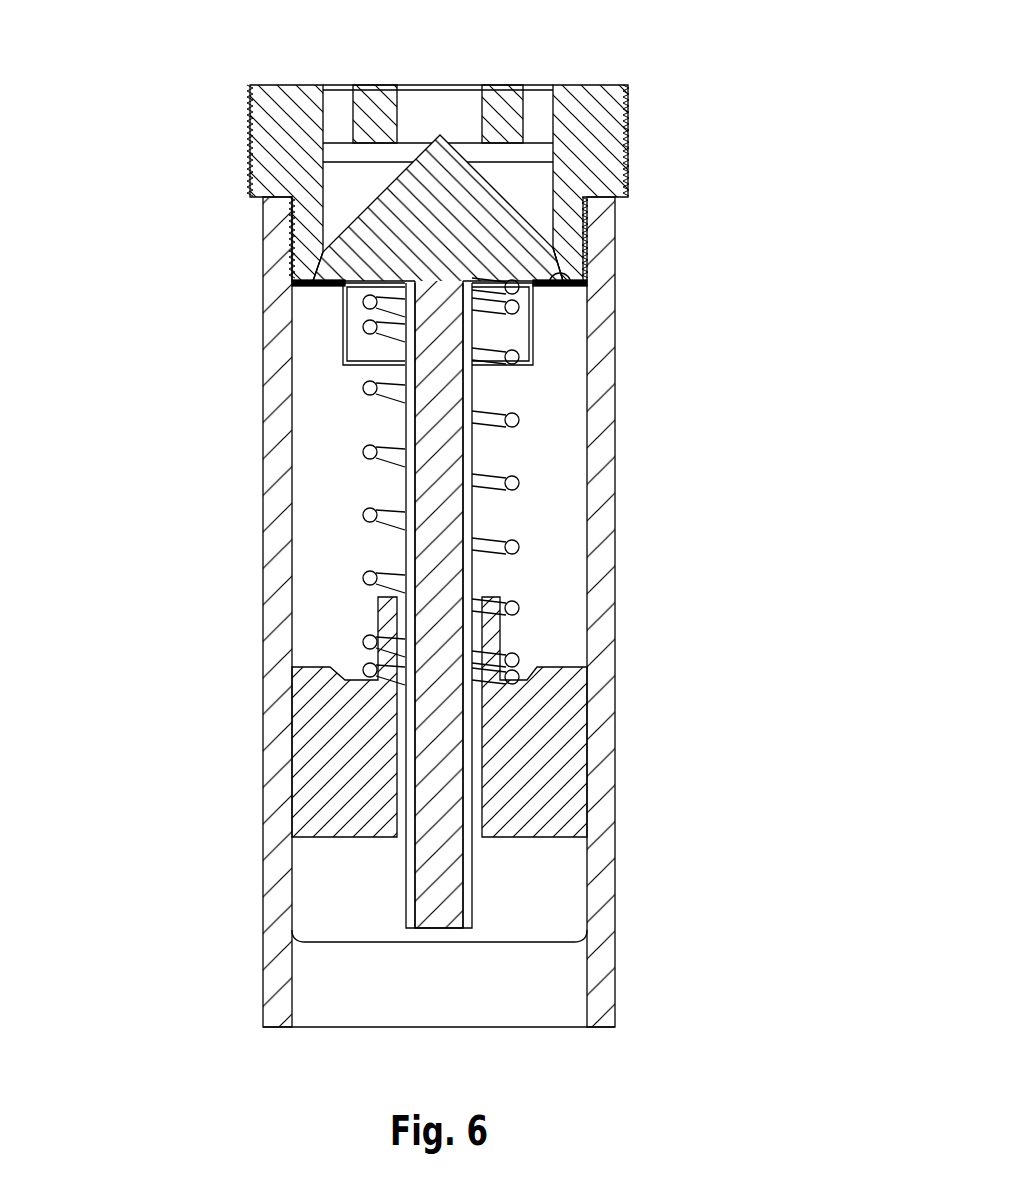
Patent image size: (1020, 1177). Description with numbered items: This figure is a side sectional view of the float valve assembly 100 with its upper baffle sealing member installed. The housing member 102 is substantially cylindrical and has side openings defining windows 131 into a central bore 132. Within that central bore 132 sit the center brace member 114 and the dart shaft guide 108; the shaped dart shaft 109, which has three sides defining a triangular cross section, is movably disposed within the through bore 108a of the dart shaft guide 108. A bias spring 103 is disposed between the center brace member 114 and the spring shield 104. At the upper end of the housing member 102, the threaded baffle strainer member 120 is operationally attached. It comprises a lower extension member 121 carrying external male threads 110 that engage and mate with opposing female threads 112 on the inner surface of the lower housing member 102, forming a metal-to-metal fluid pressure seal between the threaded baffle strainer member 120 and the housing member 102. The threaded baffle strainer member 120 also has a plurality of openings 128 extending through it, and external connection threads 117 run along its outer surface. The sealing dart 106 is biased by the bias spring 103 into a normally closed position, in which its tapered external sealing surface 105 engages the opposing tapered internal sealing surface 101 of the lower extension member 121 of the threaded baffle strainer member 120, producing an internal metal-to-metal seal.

The float valve assembly 100 is at (435, 538).
The tapered internal sealing surface 101 is at (553, 287).
The housing member 102 is at (273, 674).
The bias spring 103 is at (513, 420).
The spring shield 104 is at (527, 323).
The tapered external sealing surface 105 is at (330, 268).
The sealing dart 106 is at (370, 197).
The dart shaft guide 108 is at (380, 622).
The through bore 108a is at (398, 728).
The shaped dart shaft 109 is at (420, 495).
The external male threads 110 is at (587, 245).
The female threads 112 is at (293, 212).
The center brace member 114 is at (563, 730).
The external connection threads 117 is at (252, 112).
The threaded baffle strainer member 120 is at (597, 143).
The lower extension member 121 is at (572, 213).
The openings 128 is at (538, 113).
The windows 131 is at (530, 942).
The central bore 132 is at (363, 925).